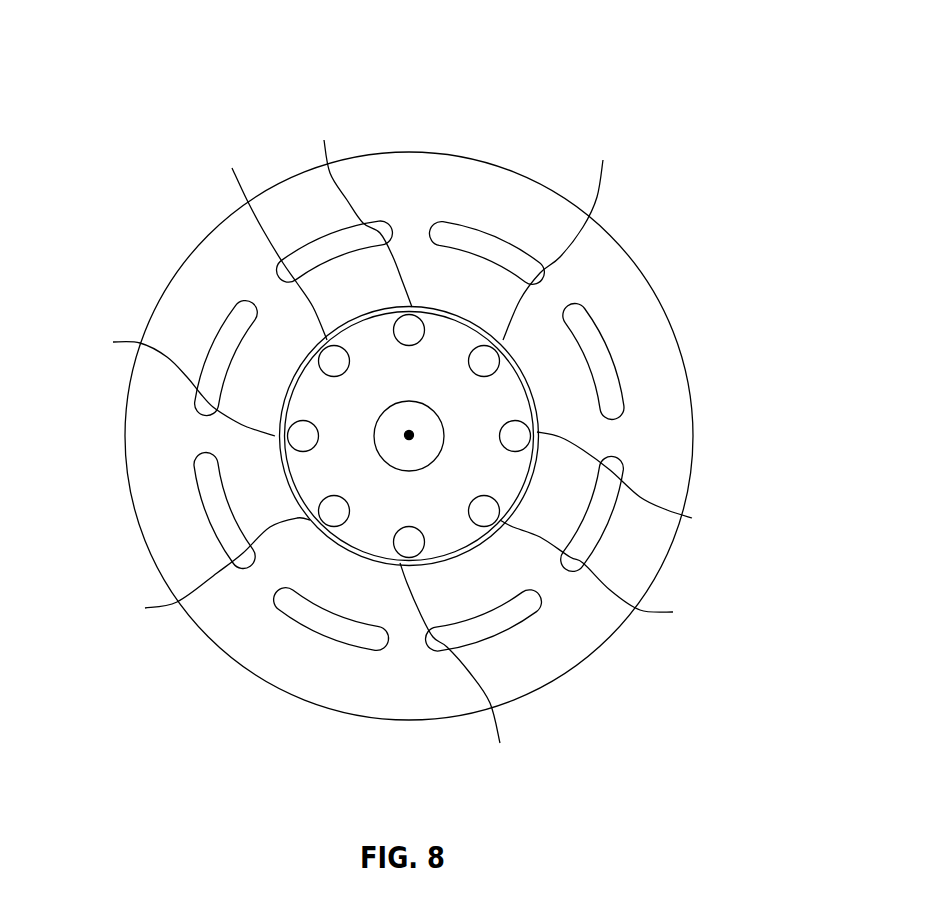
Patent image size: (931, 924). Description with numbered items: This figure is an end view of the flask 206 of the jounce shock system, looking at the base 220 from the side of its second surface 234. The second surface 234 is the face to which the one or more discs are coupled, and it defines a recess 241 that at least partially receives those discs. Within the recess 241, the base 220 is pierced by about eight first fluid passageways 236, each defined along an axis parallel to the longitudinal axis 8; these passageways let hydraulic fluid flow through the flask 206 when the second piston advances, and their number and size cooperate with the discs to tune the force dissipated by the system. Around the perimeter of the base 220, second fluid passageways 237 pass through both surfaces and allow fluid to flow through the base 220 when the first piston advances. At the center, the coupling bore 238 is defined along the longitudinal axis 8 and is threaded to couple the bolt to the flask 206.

The flask 206 is at (145, 50).
The base 220 is at (595, 83).
The second surface 234 is at (680, 397).
The first fluid passageway 236 is at (404, 445).
The second fluid passageway 237 is at (320, 238).
The coupling bore 238 is at (483, 395).
The recess 241 is at (463, 320).
The longitudinal axis 8 is at (417, 433).